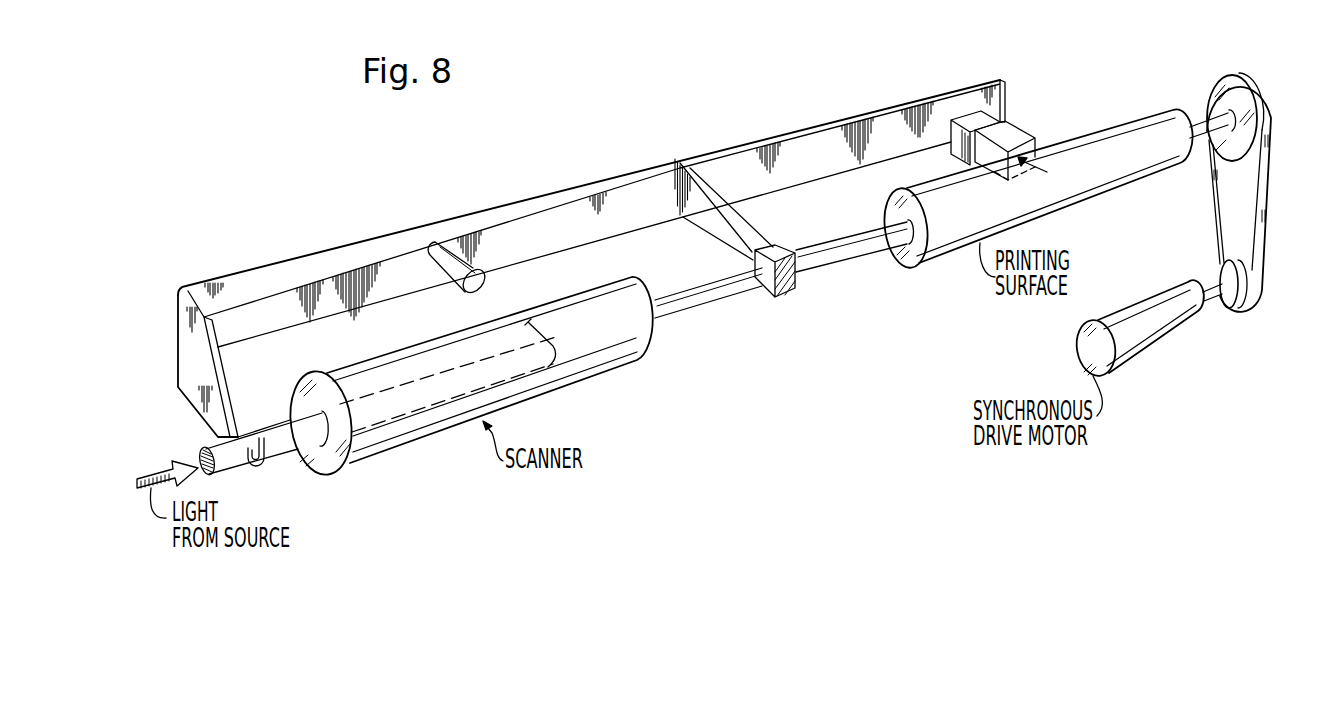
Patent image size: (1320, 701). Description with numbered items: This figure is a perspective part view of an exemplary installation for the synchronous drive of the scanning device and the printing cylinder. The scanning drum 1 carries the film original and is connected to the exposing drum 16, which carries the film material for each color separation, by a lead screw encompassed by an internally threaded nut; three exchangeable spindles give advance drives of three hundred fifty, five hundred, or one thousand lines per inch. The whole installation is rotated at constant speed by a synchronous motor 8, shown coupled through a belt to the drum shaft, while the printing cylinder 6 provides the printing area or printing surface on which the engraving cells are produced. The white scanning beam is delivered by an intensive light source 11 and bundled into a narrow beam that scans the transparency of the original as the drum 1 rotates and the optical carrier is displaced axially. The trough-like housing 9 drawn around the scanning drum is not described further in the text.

The scanning drum 1 is at (608, 363).
The printing cylinder 6 is at (1082, 147).
The synchronous motor 8 is at (1162, 300).
The trough housing 9 is at (516, 219).
The light source 11 is at (711, 300).
The exposing drum 16 is at (846, 254).